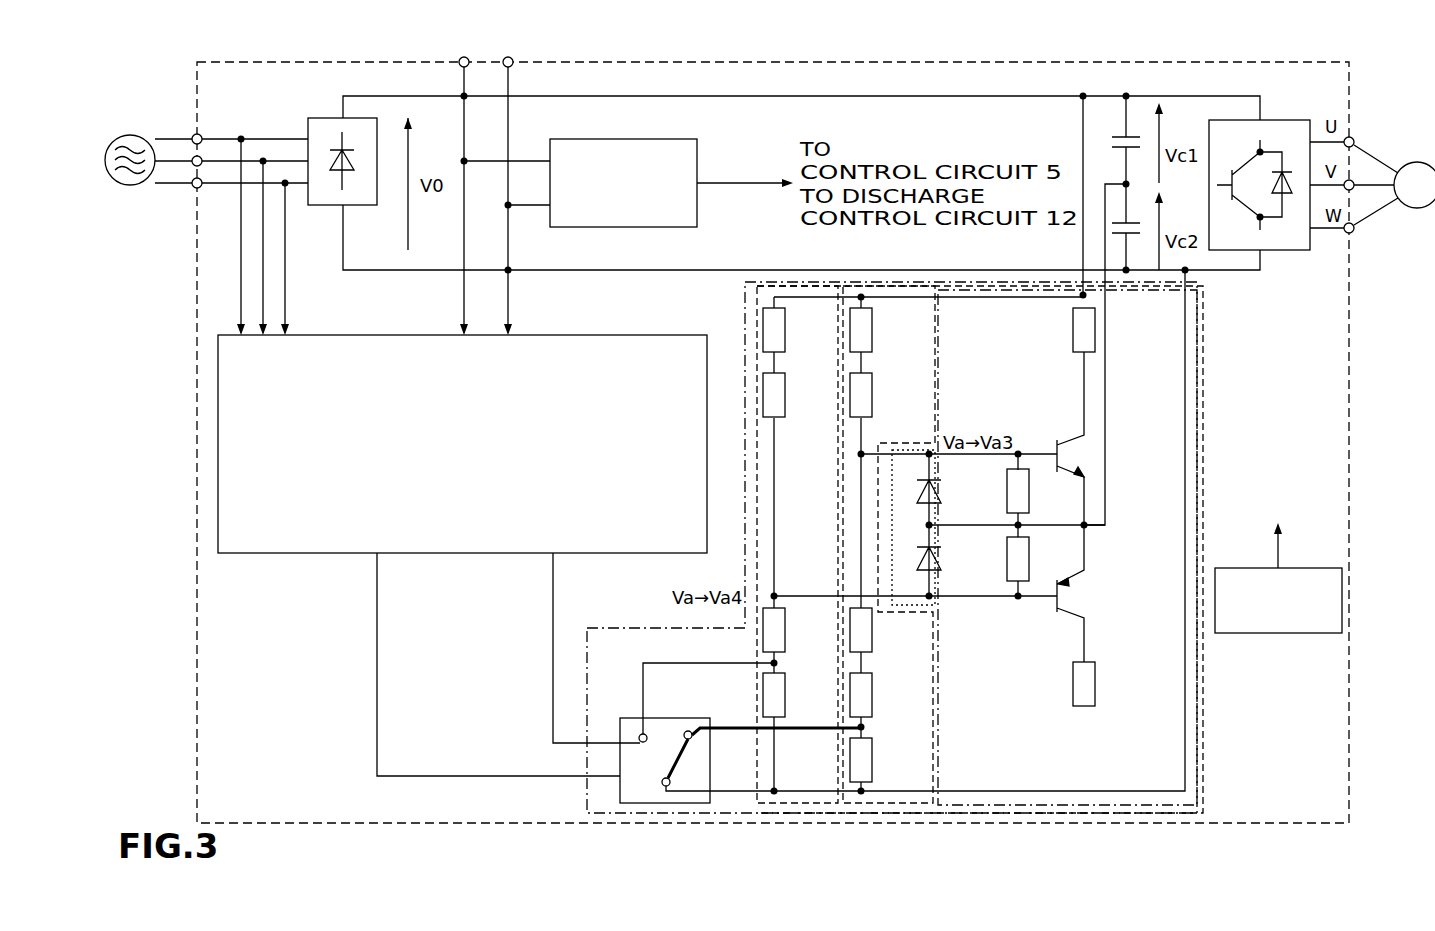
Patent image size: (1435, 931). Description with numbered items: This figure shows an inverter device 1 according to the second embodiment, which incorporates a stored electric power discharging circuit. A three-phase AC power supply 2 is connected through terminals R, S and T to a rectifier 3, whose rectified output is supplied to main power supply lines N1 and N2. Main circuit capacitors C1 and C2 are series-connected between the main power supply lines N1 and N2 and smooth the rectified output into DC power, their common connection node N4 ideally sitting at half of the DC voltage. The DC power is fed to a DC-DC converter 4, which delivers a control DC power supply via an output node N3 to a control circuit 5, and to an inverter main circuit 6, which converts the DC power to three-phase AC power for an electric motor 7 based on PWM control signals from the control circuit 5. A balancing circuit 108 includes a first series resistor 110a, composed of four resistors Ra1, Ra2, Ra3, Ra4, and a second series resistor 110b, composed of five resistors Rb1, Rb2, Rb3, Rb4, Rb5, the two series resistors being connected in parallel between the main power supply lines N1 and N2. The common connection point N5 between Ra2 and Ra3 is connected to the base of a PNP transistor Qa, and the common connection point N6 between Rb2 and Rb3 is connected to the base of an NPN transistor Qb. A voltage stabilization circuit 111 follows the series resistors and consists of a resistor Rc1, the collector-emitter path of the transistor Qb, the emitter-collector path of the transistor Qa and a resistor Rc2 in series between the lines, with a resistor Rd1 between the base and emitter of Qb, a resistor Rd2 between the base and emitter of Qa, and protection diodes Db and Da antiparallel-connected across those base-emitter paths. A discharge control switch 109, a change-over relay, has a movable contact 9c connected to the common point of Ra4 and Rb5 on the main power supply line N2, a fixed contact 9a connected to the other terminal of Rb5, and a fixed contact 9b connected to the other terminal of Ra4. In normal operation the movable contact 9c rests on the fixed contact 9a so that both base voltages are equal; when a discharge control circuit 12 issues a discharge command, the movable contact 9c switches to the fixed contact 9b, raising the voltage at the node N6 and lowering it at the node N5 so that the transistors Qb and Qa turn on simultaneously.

The inverter device 1 is at (950, 62).
The AC power supply 2 is at (130, 134).
The rectifier 3 is at (329, 118).
The DC-DC converter 4 is at (637, 140).
The control circuit 5 is at (1280, 636).
The inverter main circuit 6 is at (1280, 252).
The electric motor 7 is at (1417, 162).
The discharge control circuit 12 is at (385, 333).
The balancing circuit 108 is at (1207, 392).
The discharge control switch 109 is at (632, 717).
The fixed contact 9a is at (687, 740).
The fixed contact 9b is at (642, 743).
The movable contact 9c is at (662, 785).
The series resistor 110a is at (806, 803).
The series resistor 110b is at (890, 803).
The voltage stabilization circuit 111 is at (1014, 803).
The main power supply line N1 is at (797, 96).
The main power supply line N2 is at (762, 270).
The output node N3 is at (724, 187).
The common connection node N4 is at (1107, 468).
The common connection point N5 is at (778, 594).
The common connection point N6 is at (865, 452).
The main circuit capacitor C1 is at (1117, 140).
The main circuit capacitor C2 is at (1133, 227).
The resistor Ra1 is at (795, 330).
The resistor Ra2 is at (795, 395).
The resistor Ra3 is at (795, 630).
The resistor Ra4 is at (795, 695).
The resistor Rb1 is at (882, 330).
The resistor Rb2 is at (882, 395).
The resistor Rb3 is at (882, 630).
The resistor Rb4 is at (882, 695).
The resistor Rb5 is at (882, 760).
The resistor Rc1 is at (1058, 330).
The resistor Rc2 is at (1058, 684).
The resistor Rd1 is at (993, 489).
The resistor Rd2 is at (993, 560).
The protection diode Da is at (918, 560).
The protection diode Db is at (918, 489).
The PNP transistor Qa is at (1062, 593).
The NPN transistor Qb is at (1062, 438).